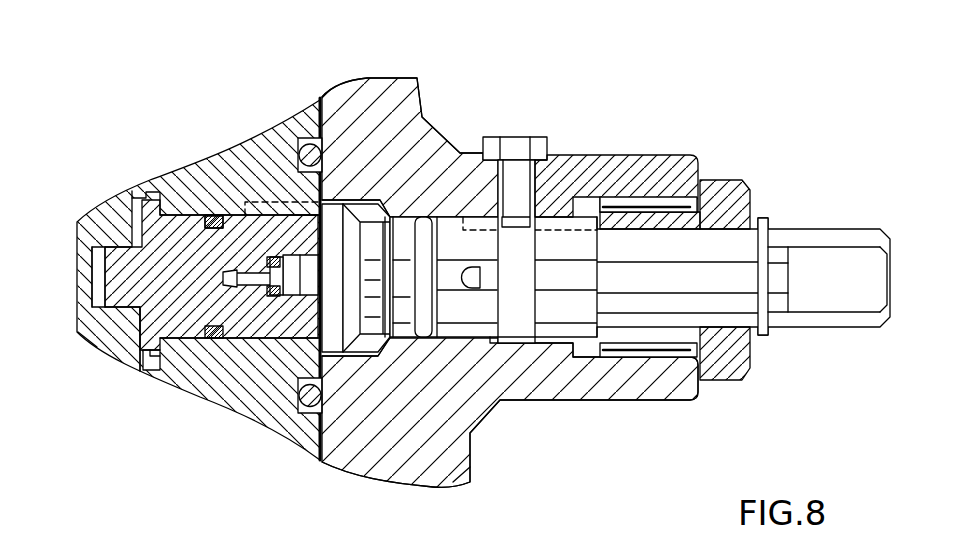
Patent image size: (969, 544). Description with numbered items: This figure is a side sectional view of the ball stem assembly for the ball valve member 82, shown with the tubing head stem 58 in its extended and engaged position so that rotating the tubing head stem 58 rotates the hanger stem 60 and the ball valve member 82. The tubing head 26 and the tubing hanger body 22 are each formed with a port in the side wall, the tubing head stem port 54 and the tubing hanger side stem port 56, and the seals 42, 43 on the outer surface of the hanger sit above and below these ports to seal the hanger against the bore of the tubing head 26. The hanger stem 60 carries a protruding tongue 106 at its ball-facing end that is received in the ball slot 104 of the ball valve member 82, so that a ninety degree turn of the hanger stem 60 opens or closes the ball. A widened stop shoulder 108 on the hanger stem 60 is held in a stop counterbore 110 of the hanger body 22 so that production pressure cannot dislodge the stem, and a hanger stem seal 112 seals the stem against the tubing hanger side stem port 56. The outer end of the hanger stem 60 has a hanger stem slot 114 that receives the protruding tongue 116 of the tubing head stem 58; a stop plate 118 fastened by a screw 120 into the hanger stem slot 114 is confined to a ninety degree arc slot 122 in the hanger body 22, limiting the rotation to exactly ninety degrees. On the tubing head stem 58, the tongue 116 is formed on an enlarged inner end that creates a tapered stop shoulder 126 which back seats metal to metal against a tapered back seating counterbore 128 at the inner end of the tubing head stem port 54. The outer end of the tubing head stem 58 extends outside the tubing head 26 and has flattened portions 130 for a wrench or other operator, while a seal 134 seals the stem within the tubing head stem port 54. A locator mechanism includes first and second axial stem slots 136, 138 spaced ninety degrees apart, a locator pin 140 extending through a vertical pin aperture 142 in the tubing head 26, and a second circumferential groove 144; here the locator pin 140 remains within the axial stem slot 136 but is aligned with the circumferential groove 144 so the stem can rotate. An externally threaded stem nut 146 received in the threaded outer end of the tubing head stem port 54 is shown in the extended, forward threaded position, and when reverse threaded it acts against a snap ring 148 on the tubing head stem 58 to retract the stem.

The tubing hanger body 22 is at (173, 183).
The tubing head 26 is at (393, 107).
The seal 42 is at (312, 160).
The seal 43 is at (310, 408).
The tubing head stem port 54 is at (550, 344).
The tubing hanger side stem port 56 is at (237, 333).
The tubing head stem 58 is at (827, 237).
The hanger stem 60 is at (196, 296).
The ball valve member 82 is at (108, 215).
The ball slot 104 is at (97, 345).
The protruding tongue 106 is at (118, 295).
The stop shoulder 108 is at (133, 345).
The stop counterbore 110 is at (160, 357).
The hanger stem seal 112 is at (215, 206).
The hanger stem slot 114 is at (292, 216).
The protruding tongue 116 is at (338, 354).
The stop plate 118 is at (277, 290).
The screw 120 is at (300, 278).
The arc slot 122 is at (232, 211).
The tapered stop shoulder 126 is at (373, 338).
The back seating counterbore 128 is at (392, 340).
The flattened portions 130 is at (861, 294).
The seal 134 is at (421, 217).
The first axial stem slot 136 is at (470, 218).
The second axial stem slot 138 is at (478, 286).
The locator pin 140 is at (520, 147).
The vertical pin aperture 142 is at (537, 200).
The second circumferential groove 144 is at (522, 331).
The stem nut 146 is at (733, 183).
The snap ring 148 is at (763, 220).